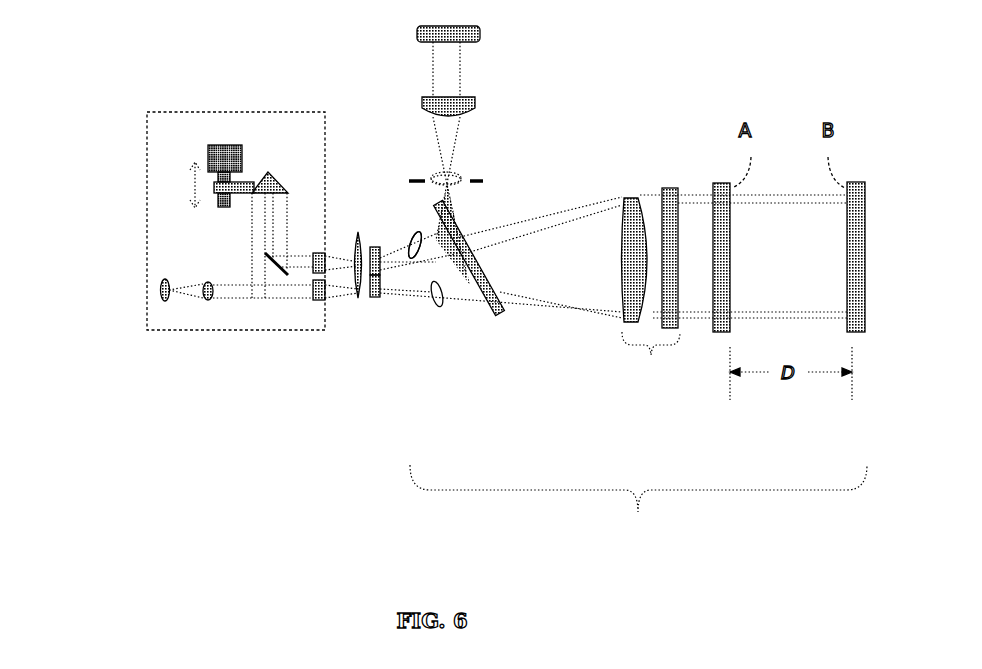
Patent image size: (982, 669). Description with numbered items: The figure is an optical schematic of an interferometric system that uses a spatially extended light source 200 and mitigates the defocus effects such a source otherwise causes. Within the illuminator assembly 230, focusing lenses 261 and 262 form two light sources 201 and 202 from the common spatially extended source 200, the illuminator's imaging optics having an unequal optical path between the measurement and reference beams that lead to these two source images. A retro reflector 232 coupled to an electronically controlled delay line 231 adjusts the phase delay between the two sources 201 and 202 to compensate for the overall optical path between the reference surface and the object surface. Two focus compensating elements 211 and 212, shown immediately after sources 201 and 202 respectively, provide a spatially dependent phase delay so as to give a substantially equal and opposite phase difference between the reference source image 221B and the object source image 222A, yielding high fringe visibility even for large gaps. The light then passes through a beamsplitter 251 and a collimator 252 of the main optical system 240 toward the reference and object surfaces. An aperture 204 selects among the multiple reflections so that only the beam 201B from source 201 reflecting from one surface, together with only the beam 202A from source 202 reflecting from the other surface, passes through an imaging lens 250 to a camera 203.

The spatially extended light source 200 is at (162, 302).
The source 201 is at (359, 300).
The beam 201B is at (446, 305).
The source 202 is at (384, 229).
The beam 202A is at (408, 242).
The camera 203 is at (448, 49).
The aperture 204 is at (420, 178).
The corrective optical element 211 is at (374, 294).
The corrective optical element 212 is at (380, 270).
The reference source image 221B is at (458, 176).
The lens 222A is at (468, 181).
The illuminator assembly 230 is at (145, 218).
The electronically controlled delay line 231 is at (222, 143).
The retro reflector 232 is at (266, 170).
The main optical system 240 is at (638, 507).
The imaging lens 250 is at (476, 100).
The beamsplitter 251 is at (503, 313).
The collimator 252 is at (735, 293).
The focusing lens 261 is at (316, 300).
The focusing lens 262 is at (312, 272).